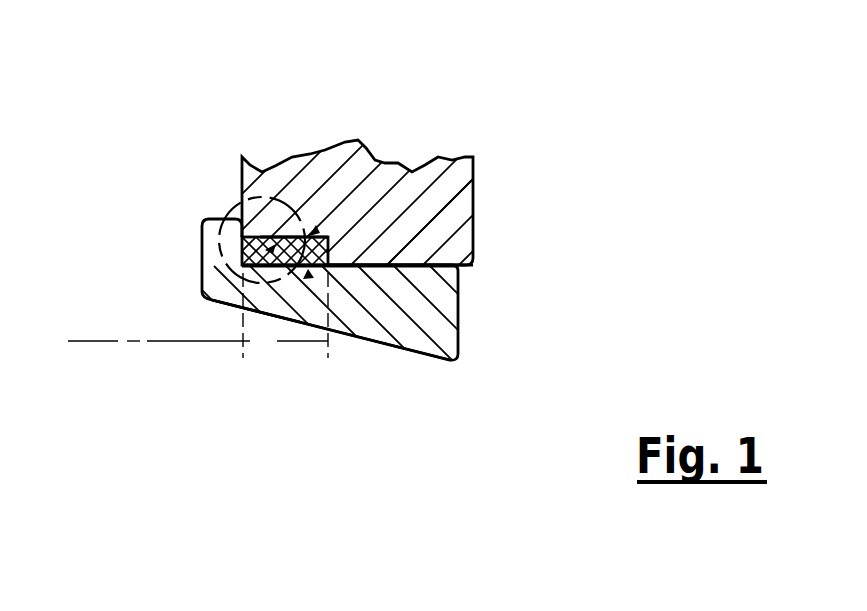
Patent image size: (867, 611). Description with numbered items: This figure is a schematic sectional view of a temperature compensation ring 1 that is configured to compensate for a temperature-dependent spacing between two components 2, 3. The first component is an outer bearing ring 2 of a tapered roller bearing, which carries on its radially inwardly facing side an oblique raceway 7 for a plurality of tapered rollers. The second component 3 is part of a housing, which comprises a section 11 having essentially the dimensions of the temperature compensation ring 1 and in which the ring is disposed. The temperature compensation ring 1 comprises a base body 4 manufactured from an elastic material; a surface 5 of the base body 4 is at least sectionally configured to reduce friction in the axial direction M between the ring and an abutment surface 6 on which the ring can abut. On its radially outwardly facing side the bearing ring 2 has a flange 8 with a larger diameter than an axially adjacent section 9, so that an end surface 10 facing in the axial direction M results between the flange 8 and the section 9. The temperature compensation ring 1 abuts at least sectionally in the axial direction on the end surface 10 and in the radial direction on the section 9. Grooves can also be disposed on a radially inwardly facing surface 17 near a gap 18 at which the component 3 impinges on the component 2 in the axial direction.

The temperature compensation ring 1 is at (259, 236).
The outer bearing ring 2 is at (443, 311).
The housing component 3 is at (465, 223).
The base body 4 is at (316, 228).
The surface 5 is at (316, 236).
The abutment surface 6 is at (285, 236).
The oblique raceway 7 is at (388, 348).
The flange 8 is at (220, 226).
The section 9 is at (398, 268).
The end surface 10 is at (205, 254).
The housing section 11 is at (352, 264).
The radially inwardly facing surface 17 is at (262, 312).
The gap 18 is at (356, 264).
The axial direction M is at (93, 342).